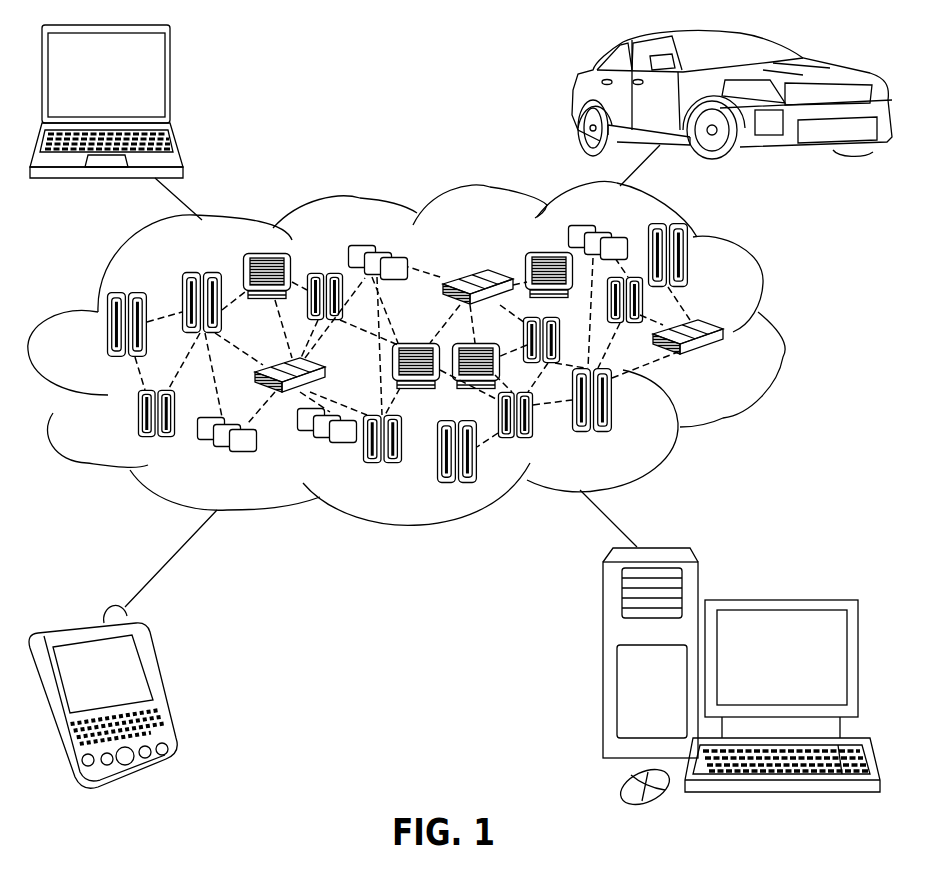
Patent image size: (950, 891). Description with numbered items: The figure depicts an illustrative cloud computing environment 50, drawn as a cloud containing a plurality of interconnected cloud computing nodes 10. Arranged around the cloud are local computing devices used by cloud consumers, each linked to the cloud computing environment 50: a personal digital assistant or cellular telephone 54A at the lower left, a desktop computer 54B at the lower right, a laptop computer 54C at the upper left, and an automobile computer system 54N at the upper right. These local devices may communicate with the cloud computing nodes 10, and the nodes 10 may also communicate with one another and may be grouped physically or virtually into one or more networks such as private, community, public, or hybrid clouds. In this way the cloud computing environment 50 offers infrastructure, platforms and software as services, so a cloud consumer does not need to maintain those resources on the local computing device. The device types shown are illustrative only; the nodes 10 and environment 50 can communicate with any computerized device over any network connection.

The cloud computing node 10 is at (460, 418).
The cloud computing environment 50 is at (779, 335).
The personal digital assistant (PDA) or cellular telephone 54A is at (160, 685).
The desktop computer 54B is at (781, 600).
The laptop computer 54C is at (172, 84).
The automobile computer system 54N is at (577, 100).